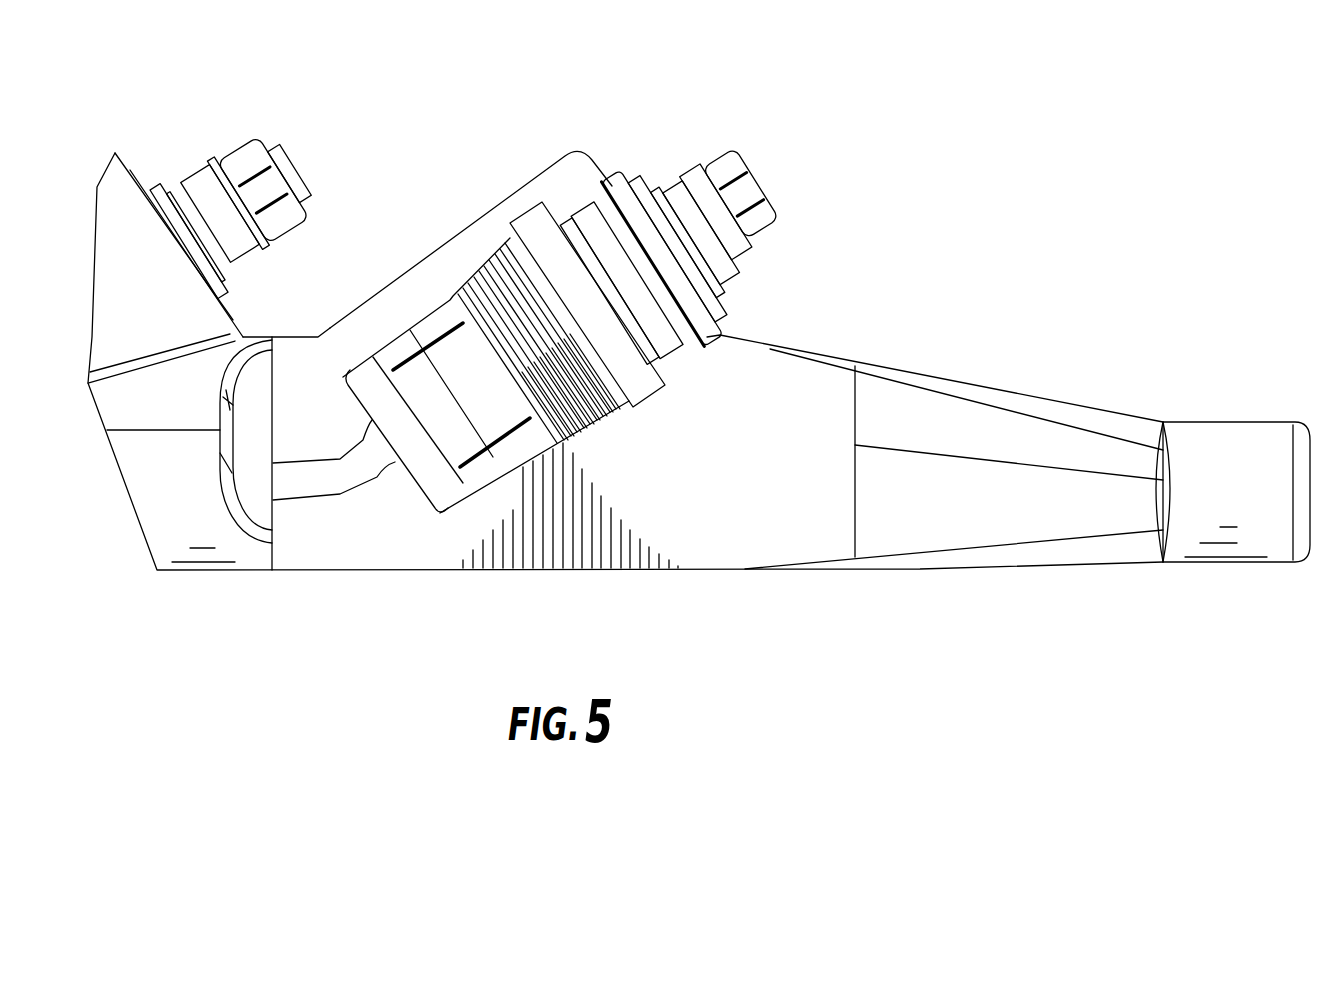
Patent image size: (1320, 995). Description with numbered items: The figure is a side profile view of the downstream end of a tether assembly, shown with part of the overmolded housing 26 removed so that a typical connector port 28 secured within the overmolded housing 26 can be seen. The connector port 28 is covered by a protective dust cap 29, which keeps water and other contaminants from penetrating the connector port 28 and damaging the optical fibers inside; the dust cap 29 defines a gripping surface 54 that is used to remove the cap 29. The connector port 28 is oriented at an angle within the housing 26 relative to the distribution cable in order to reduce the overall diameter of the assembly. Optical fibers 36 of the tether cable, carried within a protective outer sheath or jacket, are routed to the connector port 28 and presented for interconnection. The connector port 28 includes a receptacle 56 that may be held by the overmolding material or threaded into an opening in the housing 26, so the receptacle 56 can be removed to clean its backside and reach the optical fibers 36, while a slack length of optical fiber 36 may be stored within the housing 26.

The overmolded housing 26 is at (930, 448).
The connector port 28 is at (535, 232).
The protective dust cap 29 is at (725, 187).
The optical fibers 36 is at (298, 473).
The gripping surface 54 is at (776, 161).
The receptacle 56 is at (592, 227).